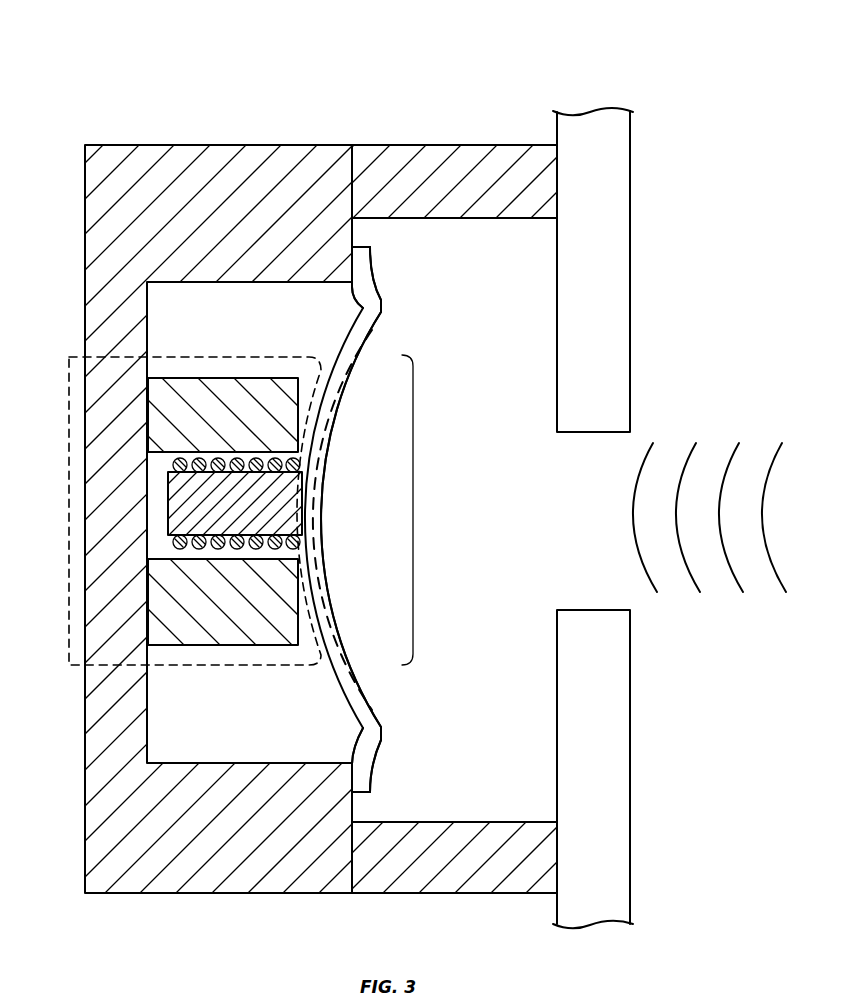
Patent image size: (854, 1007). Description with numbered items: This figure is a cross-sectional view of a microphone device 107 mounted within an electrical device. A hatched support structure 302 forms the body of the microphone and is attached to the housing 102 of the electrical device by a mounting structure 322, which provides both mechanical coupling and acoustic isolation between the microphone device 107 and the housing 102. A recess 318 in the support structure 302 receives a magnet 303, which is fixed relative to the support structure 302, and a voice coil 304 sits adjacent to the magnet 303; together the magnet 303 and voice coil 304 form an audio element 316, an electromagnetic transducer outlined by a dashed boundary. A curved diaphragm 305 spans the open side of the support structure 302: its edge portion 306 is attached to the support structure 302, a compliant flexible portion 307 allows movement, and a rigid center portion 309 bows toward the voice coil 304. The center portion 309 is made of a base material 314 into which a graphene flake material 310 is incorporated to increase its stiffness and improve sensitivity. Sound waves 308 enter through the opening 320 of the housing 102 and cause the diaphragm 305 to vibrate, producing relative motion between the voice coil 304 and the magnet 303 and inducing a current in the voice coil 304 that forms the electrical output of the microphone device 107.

The microphone device 107 is at (657, 78).
The housing 102 is at (630, 318).
The support structure 302 is at (236, 145).
The magnet 303 is at (215, 378).
The voice coil 304 is at (232, 549).
The diaphragm 305 is at (376, 374).
The edge portion 306 is at (373, 257).
The flexible portion 307 is at (356, 308).
The sound waves 308 is at (697, 618).
The center portion 309 is at (414, 512).
The graphene flake material 310 is at (363, 704).
The base material 314 is at (364, 671).
The audio element 316 is at (69, 486).
The recess 318 is at (214, 728).
The opening 320 is at (590, 610).
The mounting structure 322 is at (472, 145).